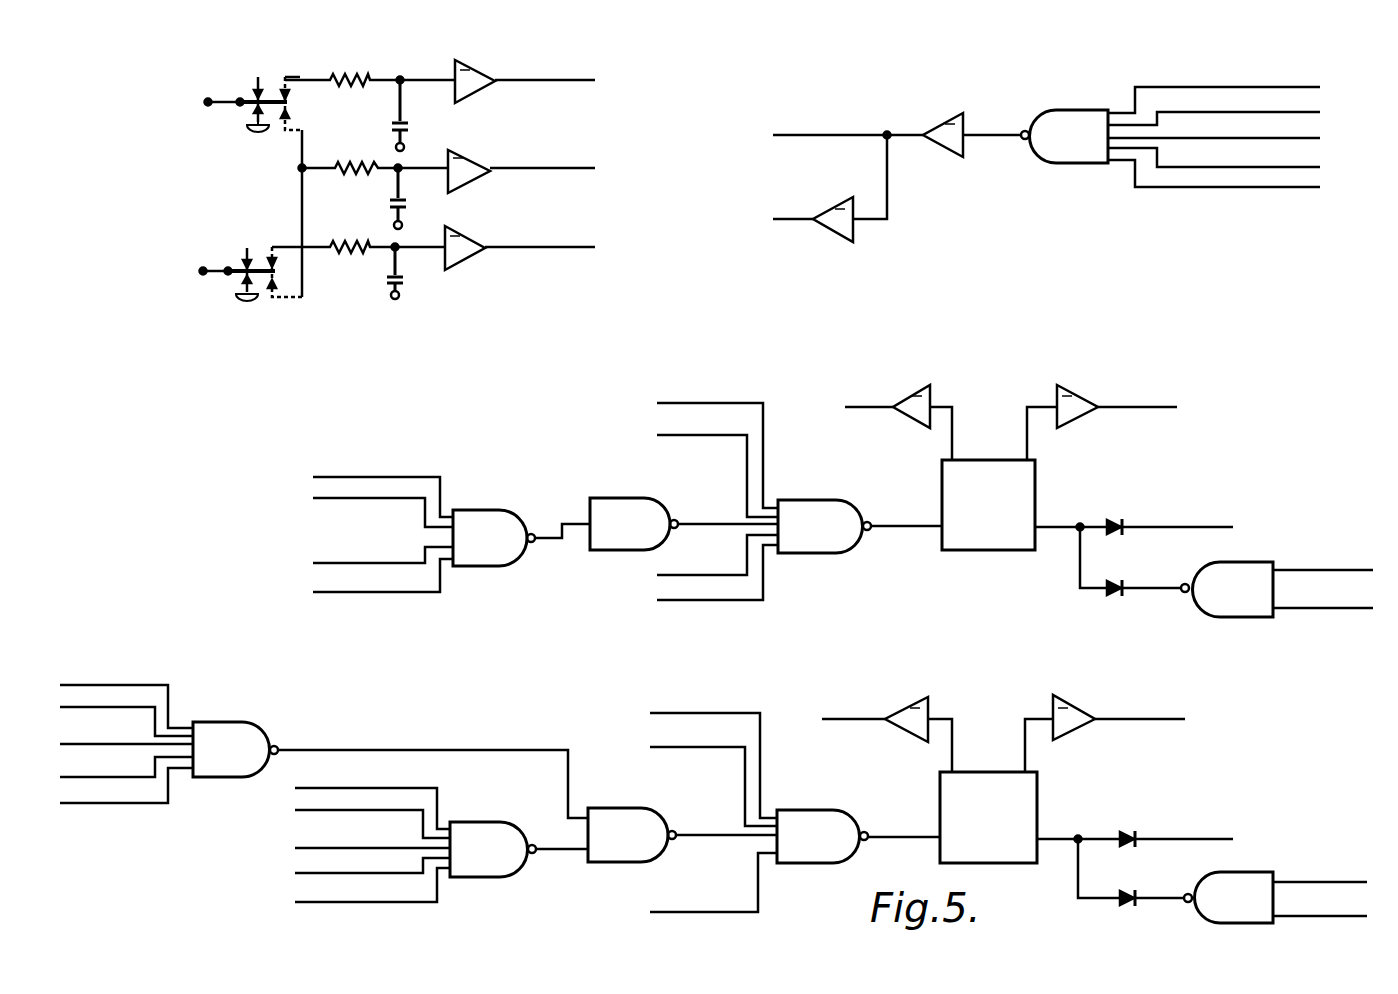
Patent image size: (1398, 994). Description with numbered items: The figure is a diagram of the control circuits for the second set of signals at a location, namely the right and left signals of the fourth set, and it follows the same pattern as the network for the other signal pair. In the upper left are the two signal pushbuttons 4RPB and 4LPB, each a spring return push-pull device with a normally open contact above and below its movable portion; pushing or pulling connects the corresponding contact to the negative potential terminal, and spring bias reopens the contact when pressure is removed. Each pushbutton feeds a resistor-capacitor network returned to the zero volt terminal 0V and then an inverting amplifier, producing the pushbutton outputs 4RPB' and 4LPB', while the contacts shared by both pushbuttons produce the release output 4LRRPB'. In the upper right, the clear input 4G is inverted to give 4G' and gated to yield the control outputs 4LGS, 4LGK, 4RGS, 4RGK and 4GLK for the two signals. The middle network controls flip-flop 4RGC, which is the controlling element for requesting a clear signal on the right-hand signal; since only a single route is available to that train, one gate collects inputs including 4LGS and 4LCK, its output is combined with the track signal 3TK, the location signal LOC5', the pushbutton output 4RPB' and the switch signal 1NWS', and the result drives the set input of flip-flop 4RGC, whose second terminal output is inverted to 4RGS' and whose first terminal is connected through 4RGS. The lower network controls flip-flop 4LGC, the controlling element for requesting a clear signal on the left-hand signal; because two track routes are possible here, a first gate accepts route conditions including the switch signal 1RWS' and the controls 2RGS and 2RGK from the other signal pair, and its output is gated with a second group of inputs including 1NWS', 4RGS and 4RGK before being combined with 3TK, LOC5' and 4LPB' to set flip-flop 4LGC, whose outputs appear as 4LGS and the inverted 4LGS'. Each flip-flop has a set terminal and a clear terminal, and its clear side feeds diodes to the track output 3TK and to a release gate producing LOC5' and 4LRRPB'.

The signal pushbutton 4RPB is at (254, 94).
The signal pushbutton 4LPB is at (248, 266).
The pushbutton output signal 4RPB' is at (531, 317).
The pushbutton release output signal 4LRRPB' is at (839, 533).
The pushbutton output signal 4LPB' is at (524, 569).
The zero volt terminal 0V is at (410, 195).
The signal clear input 4G is at (940, 136).
The inverted signal clear input 4G' is at (830, 188).
The left signal set control 4LGS is at (816, 419).
The left signal clear control 4LGK is at (1214, 108).
The right signal set control 4RGS is at (807, 477).
The right signal clear control 4RGK is at (807, 497).
The signal lock control 4GLK is at (1214, 174).
The track circuit signal 3TK is at (941, 614).
The location signal LOC5' is at (1011, 648).
The left clear check signal 4LCK is at (383, 553).
The switch position signal 1NWS' is at (536, 687).
The flip-flop 4RGC is at (1061, 528).
The inverted right signal set output 4RGS' is at (1102, 421).
The switch position signal 1RWS' is at (126, 733).
The signal 2R set control 2RGS is at (126, 766).
The signal 2R clear control 2RGK is at (126, 786).
The flip-flop 4LGC is at (1062, 839).
The inverted left signal set output 4LGS' is at (1105, 733).